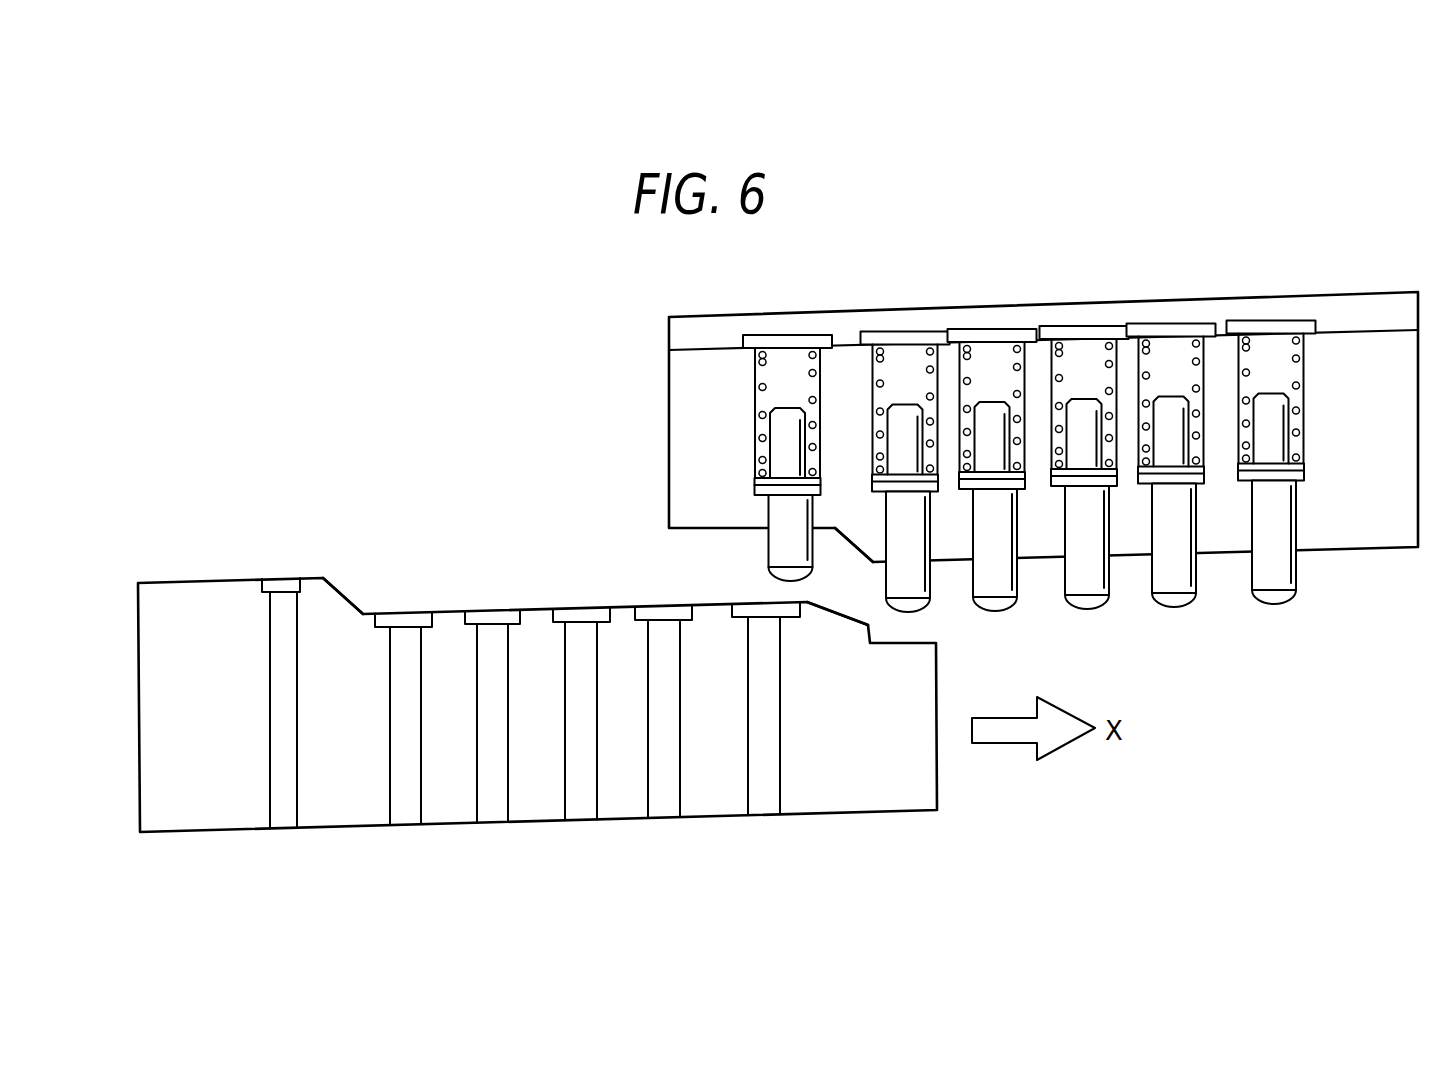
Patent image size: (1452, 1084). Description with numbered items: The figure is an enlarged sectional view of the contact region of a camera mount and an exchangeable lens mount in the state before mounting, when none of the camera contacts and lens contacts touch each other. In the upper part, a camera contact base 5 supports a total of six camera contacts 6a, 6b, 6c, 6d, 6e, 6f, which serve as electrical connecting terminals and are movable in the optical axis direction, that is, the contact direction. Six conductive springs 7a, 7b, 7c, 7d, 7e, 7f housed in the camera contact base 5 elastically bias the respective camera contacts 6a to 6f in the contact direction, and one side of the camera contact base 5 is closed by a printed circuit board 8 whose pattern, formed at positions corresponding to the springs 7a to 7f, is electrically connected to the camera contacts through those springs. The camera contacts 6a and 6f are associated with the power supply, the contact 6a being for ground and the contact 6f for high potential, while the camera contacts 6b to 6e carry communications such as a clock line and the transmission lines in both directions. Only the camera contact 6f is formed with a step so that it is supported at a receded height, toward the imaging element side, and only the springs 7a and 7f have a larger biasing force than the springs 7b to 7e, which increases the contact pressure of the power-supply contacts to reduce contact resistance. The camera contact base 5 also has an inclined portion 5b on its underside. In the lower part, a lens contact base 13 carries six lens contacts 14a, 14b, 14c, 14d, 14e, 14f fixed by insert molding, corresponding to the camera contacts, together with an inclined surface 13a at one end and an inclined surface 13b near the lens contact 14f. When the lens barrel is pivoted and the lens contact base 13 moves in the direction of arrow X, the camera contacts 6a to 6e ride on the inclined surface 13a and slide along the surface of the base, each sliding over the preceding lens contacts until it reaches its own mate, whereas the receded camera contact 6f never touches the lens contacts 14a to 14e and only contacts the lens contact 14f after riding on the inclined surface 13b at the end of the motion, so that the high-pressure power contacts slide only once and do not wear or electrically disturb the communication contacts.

The camera contact base 5 is at (1418, 377).
The inclined surface of housing 5b is at (840, 538).
The printed circuit board 8 is at (1367, 305).
The conductive spring 7a is at (1256, 342).
The conductive spring 7b is at (1157, 345).
The conductive spring 7c is at (1069, 347).
The conductive spring 7d is at (977, 350).
The conductive spring 7e is at (890, 353).
The conductive spring 7f is at (773, 356).
The camera contact 6a is at (1293, 575).
The camera contact 6b is at (1193, 578).
The camera contact 6c is at (1105, 580).
The camera contact 6d is at (1013, 583).
The camera contact 6e is at (926, 583).
The camera contact 6f is at (783, 521).
The lens contact base 13 is at (215, 820).
The inclined surface 13a is at (837, 604).
The inclined surface 13b is at (339, 590).
The lens contact 14a is at (740, 611).
The lens contact 14b is at (663, 614).
The lens contact 14c is at (580, 616).
The lens contact 14d is at (497, 618).
The lens contact 14e is at (401, 621).
The lens contact 14f is at (282, 586).